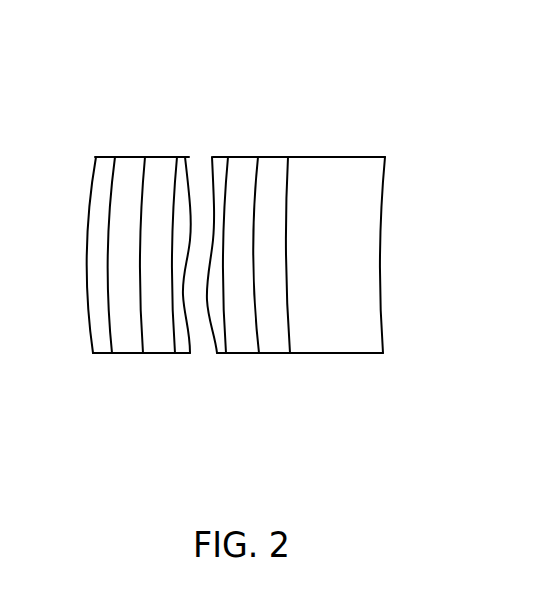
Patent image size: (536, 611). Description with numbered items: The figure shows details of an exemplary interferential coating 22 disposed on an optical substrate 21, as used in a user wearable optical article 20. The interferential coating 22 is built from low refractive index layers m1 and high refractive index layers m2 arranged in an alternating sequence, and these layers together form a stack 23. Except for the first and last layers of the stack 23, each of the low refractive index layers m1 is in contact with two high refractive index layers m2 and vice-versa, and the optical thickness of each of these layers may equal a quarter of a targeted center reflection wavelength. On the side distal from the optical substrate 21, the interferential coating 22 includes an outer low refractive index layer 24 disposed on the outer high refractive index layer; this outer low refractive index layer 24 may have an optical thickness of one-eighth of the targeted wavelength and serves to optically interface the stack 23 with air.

The user wearable optical article 20 is at (432, 83).
The optical substrate 21 is at (308, 155).
The interferential coating 22 is at (288, 86).
The stack 23 is at (292, 149).
The outer low refractive index layer 24 is at (100, 156).
The low refractive index layers m1 is at (160, 356).
The high refractive index layers m2 is at (128, 356).